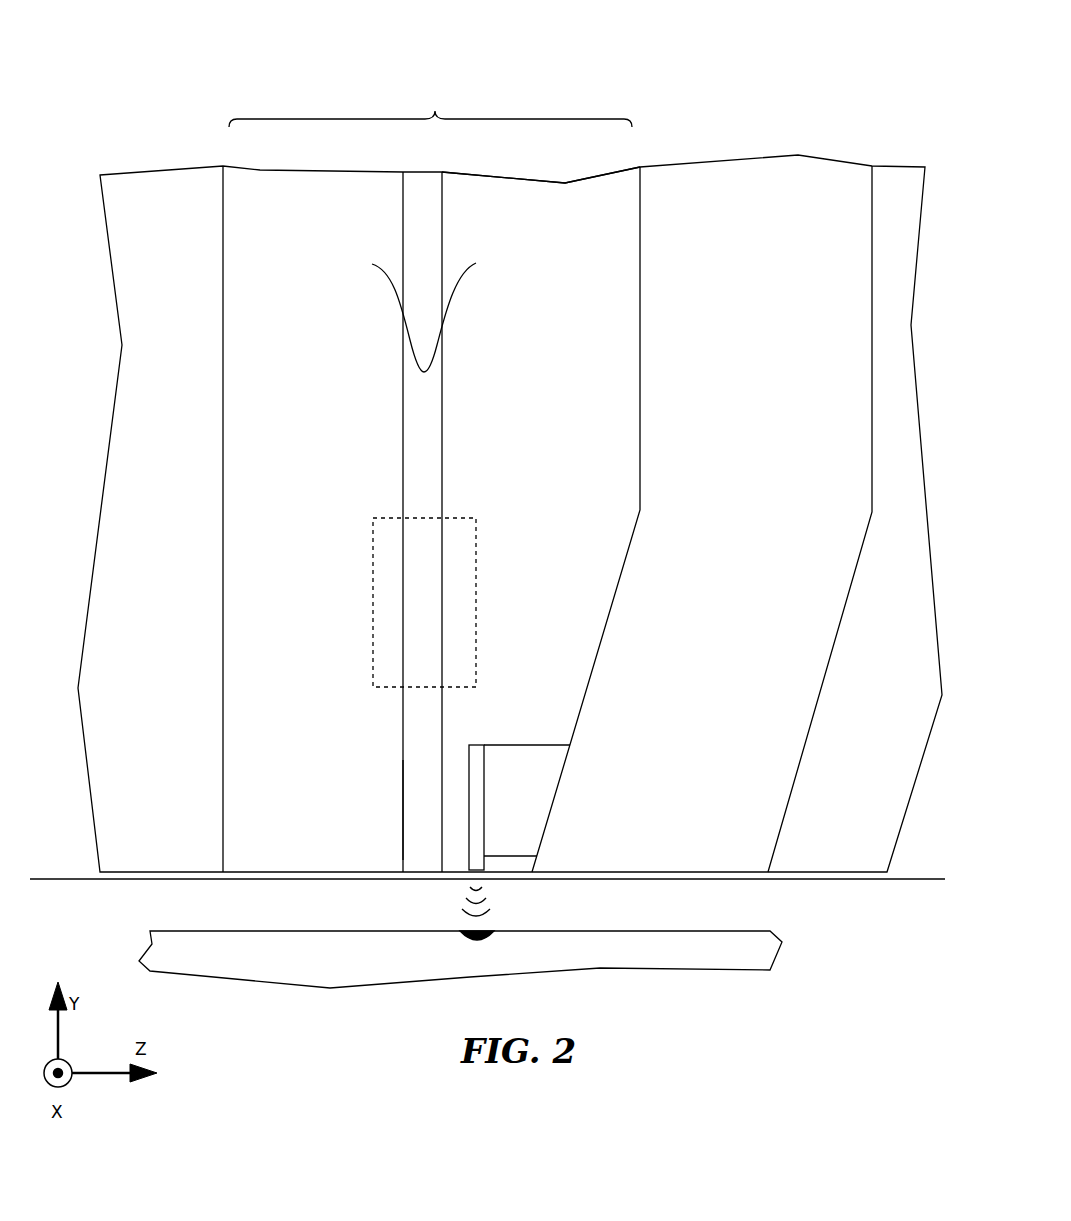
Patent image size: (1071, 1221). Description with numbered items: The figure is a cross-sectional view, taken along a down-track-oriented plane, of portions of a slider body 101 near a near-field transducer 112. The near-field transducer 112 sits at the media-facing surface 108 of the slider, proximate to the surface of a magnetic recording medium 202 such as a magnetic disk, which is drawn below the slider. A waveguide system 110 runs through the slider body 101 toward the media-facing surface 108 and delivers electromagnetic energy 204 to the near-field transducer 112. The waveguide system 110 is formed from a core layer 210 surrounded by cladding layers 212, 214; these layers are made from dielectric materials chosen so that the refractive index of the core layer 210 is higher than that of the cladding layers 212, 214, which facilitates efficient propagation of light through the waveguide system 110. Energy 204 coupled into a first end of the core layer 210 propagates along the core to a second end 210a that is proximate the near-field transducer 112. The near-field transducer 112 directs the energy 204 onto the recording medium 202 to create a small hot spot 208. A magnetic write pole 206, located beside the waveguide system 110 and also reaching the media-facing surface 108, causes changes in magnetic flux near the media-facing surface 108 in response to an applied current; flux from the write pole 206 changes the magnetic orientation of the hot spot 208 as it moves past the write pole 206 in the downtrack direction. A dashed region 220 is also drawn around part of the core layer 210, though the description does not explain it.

The slider body 101 is at (797, 86).
The waveguide system 110 is at (430, 101).
The cladding layer 214 is at (252, 170).
The core layer 210 is at (428, 172).
The cladding layer 212 is at (478, 188).
The magnetic write pole 206 is at (772, 158).
The electromagnetic energy 204 is at (391, 277).
The dashed region 220 is at (372, 650).
The second end of the core 210a is at (403, 810).
The near-field transducer 112 is at (473, 845).
The media-facing surface 108 is at (825, 880).
The magnetic recording medium 202 is at (212, 957).
The hot spot 208 is at (477, 942).